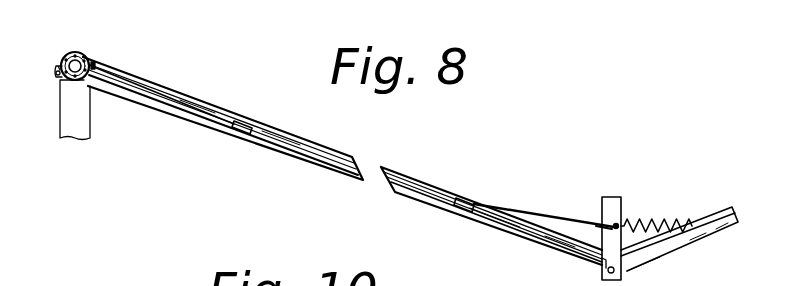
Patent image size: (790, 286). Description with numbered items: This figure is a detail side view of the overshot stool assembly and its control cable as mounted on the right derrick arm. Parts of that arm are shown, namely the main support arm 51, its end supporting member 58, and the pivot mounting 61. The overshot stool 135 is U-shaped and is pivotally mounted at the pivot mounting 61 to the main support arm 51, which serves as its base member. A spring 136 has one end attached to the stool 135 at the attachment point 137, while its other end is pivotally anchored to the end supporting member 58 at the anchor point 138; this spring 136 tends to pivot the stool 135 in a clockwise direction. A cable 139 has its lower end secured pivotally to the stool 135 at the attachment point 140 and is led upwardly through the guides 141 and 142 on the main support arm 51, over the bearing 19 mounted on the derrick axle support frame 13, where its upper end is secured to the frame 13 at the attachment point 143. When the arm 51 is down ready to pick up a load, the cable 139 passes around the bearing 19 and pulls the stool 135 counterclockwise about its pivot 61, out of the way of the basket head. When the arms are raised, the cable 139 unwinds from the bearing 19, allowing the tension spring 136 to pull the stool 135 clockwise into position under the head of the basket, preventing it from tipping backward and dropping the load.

The derrick axle support frame 13 is at (70, 110).
The bearing 19 is at (84, 52).
The cable attachment point on frame 143 is at (54, 74).
The cable guide 142 is at (252, 127).
The main support arm 51 is at (427, 200).
The cable guide 141 is at (474, 201).
The cable 139 is at (524, 214).
The cable lower end attachment 140 is at (608, 226).
The overshot stool 135 is at (612, 197).
The spring attachment point on stool 137 is at (619, 223).
The spring 136 is at (651, 221).
The spring anchor point 138 is at (712, 233).
The end supporting member 58 is at (678, 248).
The pivot mounting 61 is at (605, 266).